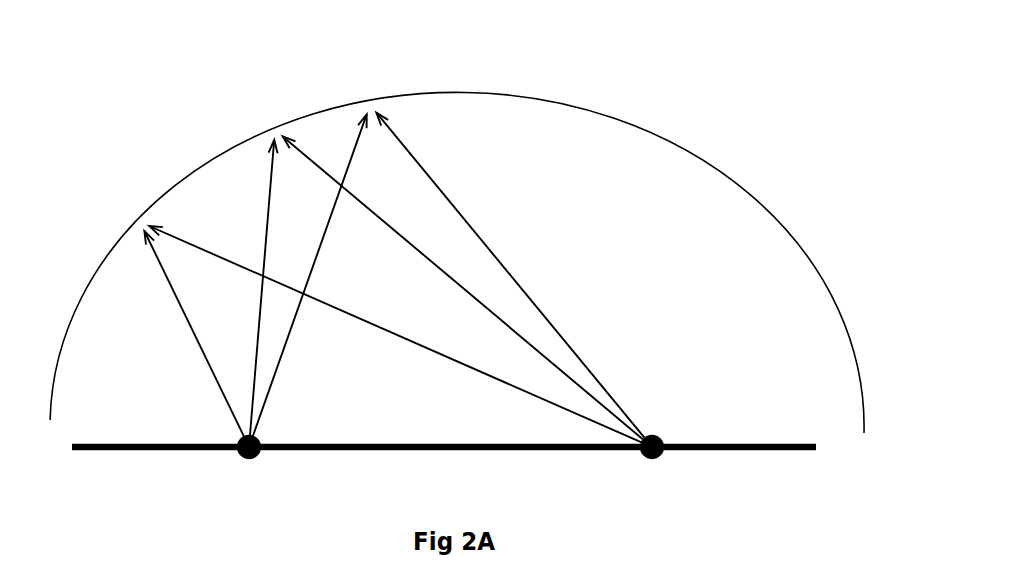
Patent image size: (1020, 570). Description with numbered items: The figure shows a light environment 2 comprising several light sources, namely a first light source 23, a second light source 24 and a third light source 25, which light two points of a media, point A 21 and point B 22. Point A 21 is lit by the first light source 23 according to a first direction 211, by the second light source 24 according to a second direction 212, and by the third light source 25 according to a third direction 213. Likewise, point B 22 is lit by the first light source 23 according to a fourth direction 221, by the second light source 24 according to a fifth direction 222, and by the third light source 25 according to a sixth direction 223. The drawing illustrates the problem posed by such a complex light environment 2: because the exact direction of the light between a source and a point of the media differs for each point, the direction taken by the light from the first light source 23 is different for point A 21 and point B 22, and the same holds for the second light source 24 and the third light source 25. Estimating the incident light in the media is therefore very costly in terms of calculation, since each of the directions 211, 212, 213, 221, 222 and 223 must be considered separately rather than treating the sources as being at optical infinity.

The light environment 2 is at (727, 177).
The point A 21 is at (258, 455).
The point B 22 is at (663, 457).
The first light source 23 is at (135, 215).
The second light source 24 is at (267, 123).
The third light source 25 is at (363, 100).
The direction ω1A 211 is at (183, 313).
The direction ω2A 212 is at (267, 201).
The direction ω3A 213 is at (293, 330).
The direction ω1B 221 is at (473, 370).
The direction ω2B 222 is at (410, 242).
The direction ω3B 223 is at (537, 307).